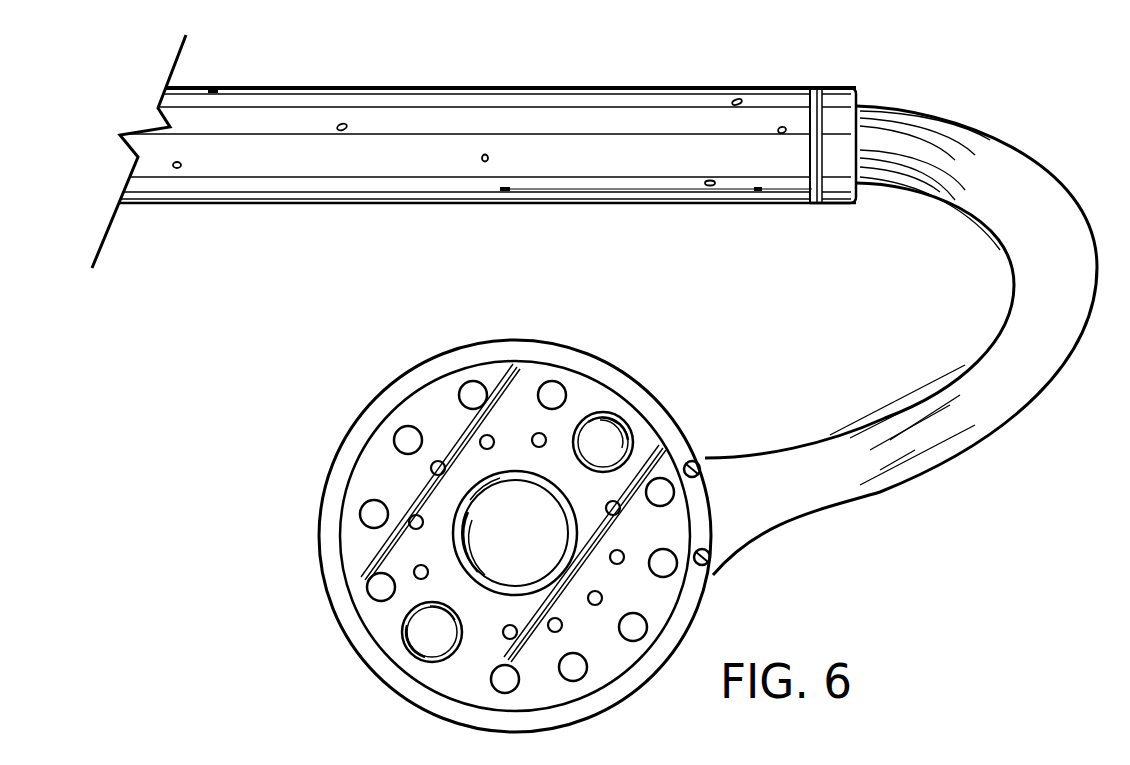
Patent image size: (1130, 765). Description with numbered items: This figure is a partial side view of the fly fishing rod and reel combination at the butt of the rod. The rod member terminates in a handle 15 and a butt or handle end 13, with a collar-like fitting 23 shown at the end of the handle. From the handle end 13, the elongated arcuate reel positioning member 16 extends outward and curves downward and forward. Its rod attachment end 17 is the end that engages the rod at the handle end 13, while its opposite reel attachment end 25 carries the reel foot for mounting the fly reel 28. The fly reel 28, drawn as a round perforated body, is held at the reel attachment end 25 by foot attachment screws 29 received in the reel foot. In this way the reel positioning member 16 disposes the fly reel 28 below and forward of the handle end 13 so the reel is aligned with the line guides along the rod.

The handle end 13 is at (808, 187).
The handle 15 is at (437, 93).
The reel positioning member 16 is at (1013, 318).
The rod attachment end 17 is at (890, 173).
The coupling collar 23 is at (843, 88).
The reel attachment end 25 is at (748, 472).
The fly reel 28 is at (510, 347).
The foot attachment screws 29 is at (696, 477).